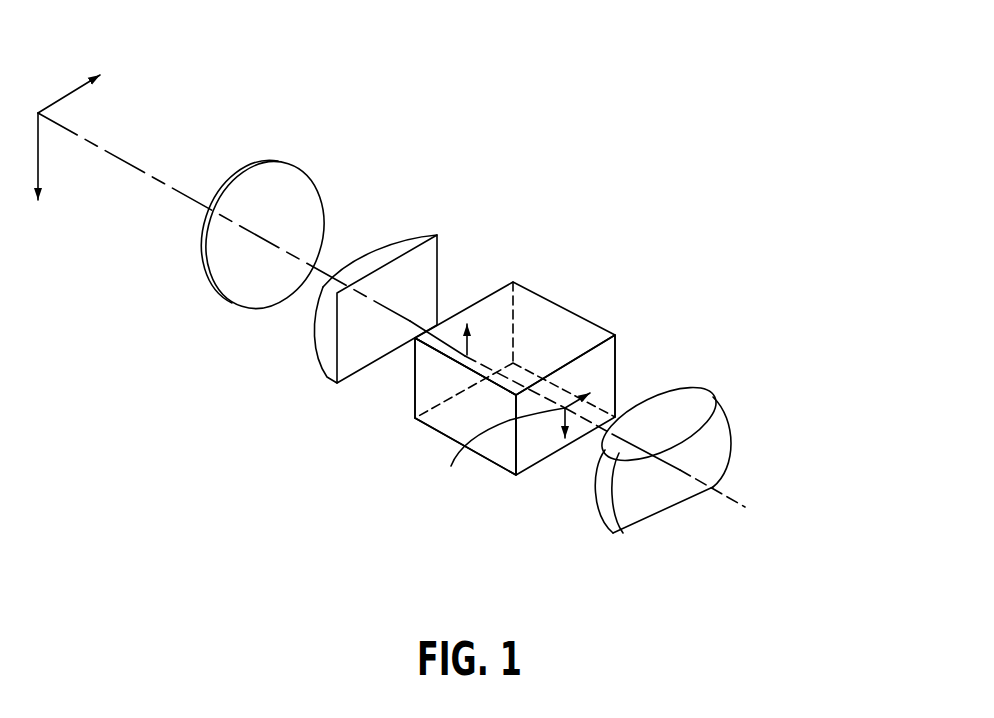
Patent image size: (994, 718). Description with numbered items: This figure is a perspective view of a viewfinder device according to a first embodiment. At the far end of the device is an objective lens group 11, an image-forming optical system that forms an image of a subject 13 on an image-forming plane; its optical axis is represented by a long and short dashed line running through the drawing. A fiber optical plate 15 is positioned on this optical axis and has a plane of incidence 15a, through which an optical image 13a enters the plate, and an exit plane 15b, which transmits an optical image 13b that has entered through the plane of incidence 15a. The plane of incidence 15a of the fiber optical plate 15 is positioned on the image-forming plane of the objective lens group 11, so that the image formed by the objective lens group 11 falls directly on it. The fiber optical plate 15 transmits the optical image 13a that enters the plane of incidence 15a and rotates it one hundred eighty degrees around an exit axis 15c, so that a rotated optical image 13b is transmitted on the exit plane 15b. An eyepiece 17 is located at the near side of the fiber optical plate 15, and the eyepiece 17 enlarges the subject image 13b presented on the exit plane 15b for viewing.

The objective lens group 11 is at (444, 228).
The subject 13 is at (70, 90).
The optical image 13a is at (448, 358).
The rotated optical image 13b is at (565, 408).
The fiber optical plate 15 is at (537, 330).
The plane of incidence 15a is at (482, 327).
The exit plane 15b is at (613, 360).
The exit axis 15c is at (487, 453).
The eyepiece 17 is at (694, 402).